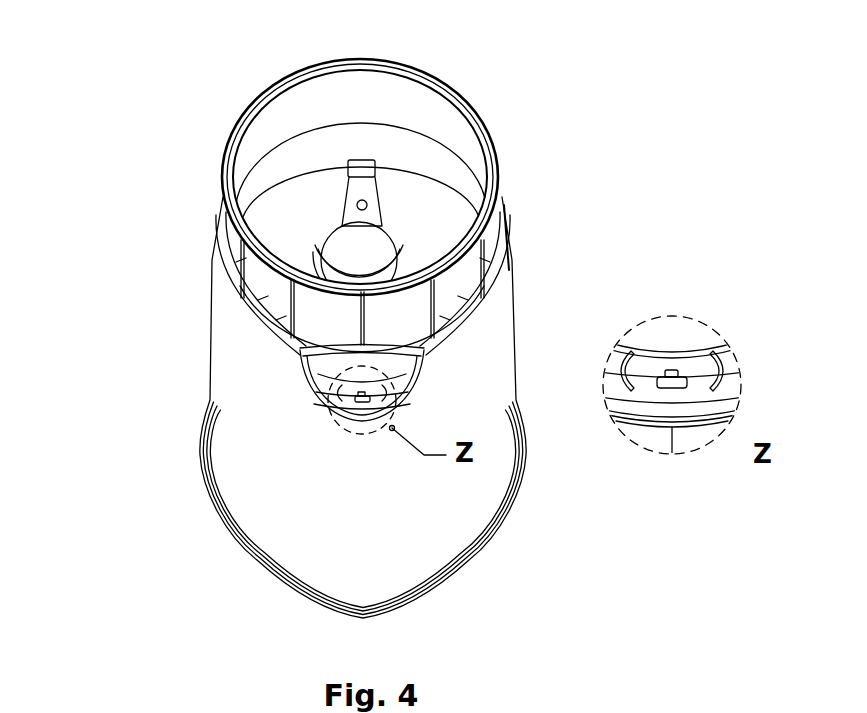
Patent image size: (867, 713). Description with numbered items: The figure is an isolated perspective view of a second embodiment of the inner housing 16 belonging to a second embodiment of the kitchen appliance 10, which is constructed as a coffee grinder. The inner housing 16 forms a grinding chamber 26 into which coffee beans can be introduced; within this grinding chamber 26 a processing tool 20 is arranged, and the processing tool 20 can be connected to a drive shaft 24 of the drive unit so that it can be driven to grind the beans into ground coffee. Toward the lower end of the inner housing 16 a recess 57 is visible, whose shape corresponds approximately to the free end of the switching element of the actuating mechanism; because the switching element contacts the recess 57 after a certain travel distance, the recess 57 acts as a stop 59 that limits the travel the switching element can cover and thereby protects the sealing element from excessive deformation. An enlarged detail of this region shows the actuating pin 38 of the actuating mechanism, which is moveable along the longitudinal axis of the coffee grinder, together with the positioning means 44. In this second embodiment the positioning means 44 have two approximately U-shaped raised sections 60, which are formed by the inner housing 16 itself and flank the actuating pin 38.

The kitchen appliance 10 is at (415, 338).
The inner housing 16 is at (228, 384).
The processing tool 20 is at (358, 172).
The drive shaft 24 is at (370, 247).
The grinding chamber 26 is at (276, 181).
The actuating pin 38 is at (670, 370).
The positioning means 44 is at (701, 339).
The recess 57 is at (330, 406).
The stop 59 is at (325, 388).
The U-shaped raised sections 60 is at (727, 358).